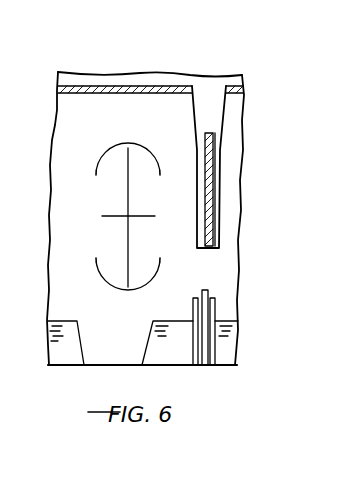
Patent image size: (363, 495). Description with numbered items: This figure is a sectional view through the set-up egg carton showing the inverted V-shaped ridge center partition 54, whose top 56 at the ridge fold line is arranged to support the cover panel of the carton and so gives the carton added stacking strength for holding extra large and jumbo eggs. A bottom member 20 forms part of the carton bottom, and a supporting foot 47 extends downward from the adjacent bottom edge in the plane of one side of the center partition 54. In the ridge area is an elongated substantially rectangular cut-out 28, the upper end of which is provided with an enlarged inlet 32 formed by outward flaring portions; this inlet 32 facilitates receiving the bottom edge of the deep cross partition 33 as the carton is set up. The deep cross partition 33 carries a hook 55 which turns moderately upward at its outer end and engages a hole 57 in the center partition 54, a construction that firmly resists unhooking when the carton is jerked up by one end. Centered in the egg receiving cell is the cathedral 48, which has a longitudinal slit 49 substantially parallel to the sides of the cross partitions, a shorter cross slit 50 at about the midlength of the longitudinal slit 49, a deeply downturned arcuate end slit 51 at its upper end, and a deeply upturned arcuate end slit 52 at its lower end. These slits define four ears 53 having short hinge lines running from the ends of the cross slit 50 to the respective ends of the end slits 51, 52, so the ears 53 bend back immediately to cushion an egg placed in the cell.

The inverted V-shaped ridge center partition 54 is at (60, 128).
The top of the inverted V-shaped center partition 56 is at (147, 70).
The enlarged inlet 32 is at (209, 94).
The cut-out 28 is at (216, 142).
The deep cross partition 33 is at (216, 198).
The cathedral 48 is at (130, 215).
The downturned end slit 51 is at (134, 148).
The upturned end slit 52 is at (134, 290).
The longitudinal slit 49 is at (128, 198).
The cross slit 50 is at (137, 214).
The ears 53 is at (112, 178).
The hooks 55 is at (206, 289).
The holes 57 is at (216, 309).
The supporting feet 47 is at (102, 358).
The bottom member 20 is at (167, 357).